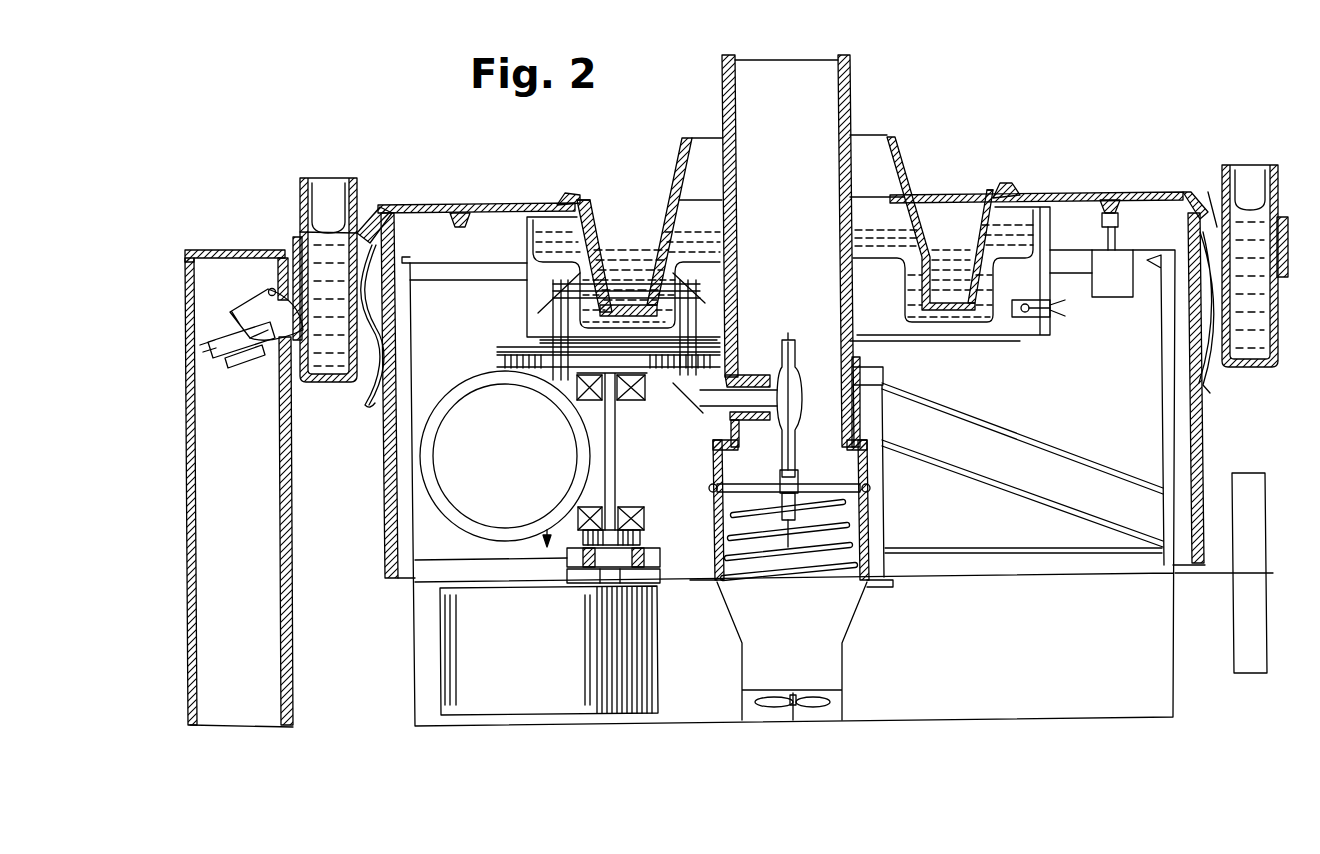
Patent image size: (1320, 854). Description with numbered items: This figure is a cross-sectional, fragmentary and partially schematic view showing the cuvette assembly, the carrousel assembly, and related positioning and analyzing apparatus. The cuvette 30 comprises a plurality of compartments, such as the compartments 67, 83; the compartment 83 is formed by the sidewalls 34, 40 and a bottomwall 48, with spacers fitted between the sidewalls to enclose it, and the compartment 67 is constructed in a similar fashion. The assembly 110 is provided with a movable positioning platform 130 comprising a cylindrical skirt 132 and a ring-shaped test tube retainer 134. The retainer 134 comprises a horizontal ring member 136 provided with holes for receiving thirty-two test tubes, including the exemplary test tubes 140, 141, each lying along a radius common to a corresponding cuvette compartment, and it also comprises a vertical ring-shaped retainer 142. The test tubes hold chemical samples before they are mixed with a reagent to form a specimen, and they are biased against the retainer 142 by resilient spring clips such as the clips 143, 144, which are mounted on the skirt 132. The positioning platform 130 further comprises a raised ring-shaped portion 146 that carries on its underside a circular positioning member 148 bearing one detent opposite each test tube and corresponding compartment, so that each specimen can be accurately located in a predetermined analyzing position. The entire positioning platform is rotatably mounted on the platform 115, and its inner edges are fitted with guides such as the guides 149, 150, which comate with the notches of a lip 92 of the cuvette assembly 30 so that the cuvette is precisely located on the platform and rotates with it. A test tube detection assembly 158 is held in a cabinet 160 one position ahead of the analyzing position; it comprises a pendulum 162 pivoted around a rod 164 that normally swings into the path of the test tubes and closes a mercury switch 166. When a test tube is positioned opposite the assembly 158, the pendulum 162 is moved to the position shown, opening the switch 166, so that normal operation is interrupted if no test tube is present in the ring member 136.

The cuvette 30 is at (675, 130).
The sidewall 34 is at (665, 228).
The sidewall 40 is at (600, 205).
The bottomwall 48 is at (572, 330).
The compartment 67 is at (958, 181).
The compartment 83 is at (623, 193).
The lip 92 is at (985, 185).
The assembly 110 is at (748, 742).
The platform 115 is at (1148, 265).
The positioning platform 130 is at (418, 178).
The cylindrical skirt 132 is at (385, 517).
The test tube retainer 134 is at (278, 233).
The horizontal ring member 136 is at (362, 232).
The test tube 140 is at (307, 178).
The test tube 141 is at (1235, 165).
The vertical ring-shaped retainer 142 is at (293, 248).
The spring clip 143 is at (366, 407).
The spring clip 144 is at (1209, 380).
The raised ring-shaped portion 146 is at (1092, 180).
The circular positioning member 148 is at (455, 226).
The guide 149 is at (572, 192).
The guide 150 is at (1020, 165).
The test tube detection assembly 158 is at (191, 288).
The cabinet 160 is at (186, 337).
The pendulum 162 is at (245, 296).
The rod 164 is at (271, 289).
The mercury switch 166 is at (256, 368).